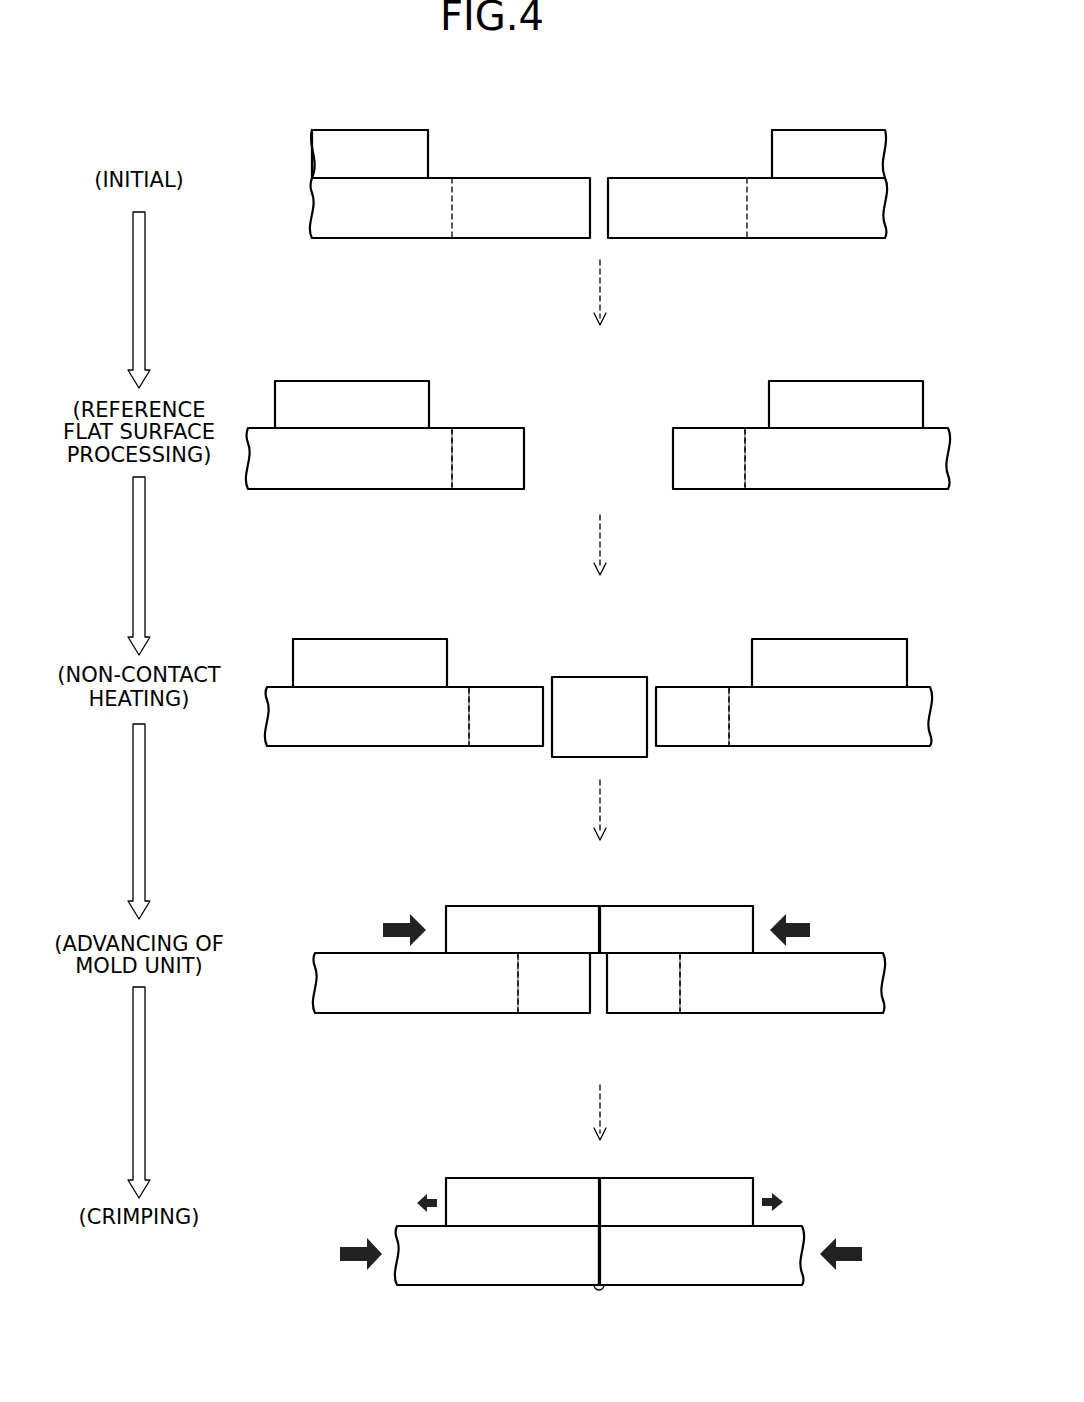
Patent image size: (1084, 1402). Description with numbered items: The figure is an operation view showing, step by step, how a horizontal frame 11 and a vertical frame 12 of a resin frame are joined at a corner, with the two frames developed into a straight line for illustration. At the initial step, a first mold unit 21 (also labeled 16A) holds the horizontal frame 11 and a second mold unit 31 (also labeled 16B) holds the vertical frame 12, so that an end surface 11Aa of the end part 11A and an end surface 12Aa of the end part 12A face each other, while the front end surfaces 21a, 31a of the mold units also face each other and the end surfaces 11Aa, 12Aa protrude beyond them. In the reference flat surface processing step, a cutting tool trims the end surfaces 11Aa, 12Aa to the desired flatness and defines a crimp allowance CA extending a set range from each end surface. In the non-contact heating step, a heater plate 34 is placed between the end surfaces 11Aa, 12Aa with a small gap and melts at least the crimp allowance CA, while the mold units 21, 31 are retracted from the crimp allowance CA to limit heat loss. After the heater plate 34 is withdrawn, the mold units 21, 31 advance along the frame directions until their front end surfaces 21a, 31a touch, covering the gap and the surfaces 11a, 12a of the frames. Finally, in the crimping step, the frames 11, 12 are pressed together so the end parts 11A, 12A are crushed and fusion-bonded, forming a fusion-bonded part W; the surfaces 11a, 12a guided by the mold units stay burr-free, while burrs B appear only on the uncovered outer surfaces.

The end part of the horizontal frame 11A is at (422, 755).
The horizontal frame 11 is at (430, 238).
The end part of the vertical frame 12A is at (775, 755).
The vertical frame 12 is at (815, 238).
The surface of the horizontal frame 11a is at (350, 176).
The surface of the vertical frame 12a is at (846, 176).
The end surface of the horizontal frame 11Aa is at (590, 186).
The end surface of the vertical frame 12Aa is at (607, 186).
The first mold unit 21 is at (437, 648).
The first mold unit 16A is at (403, 138).
The front end surface of the first mold unit 21a is at (428, 158).
The second mold unit 31 is at (761, 648).
The second mold unit 16B is at (793, 140).
The front end surface of the second mold unit 31a is at (771, 158).
The heater plate 34 is at (597, 690).
The crimp allowance CA is at (483, 490).
The burr B is at (598, 1296).
The fusion-bonded part W is at (612, 1285).